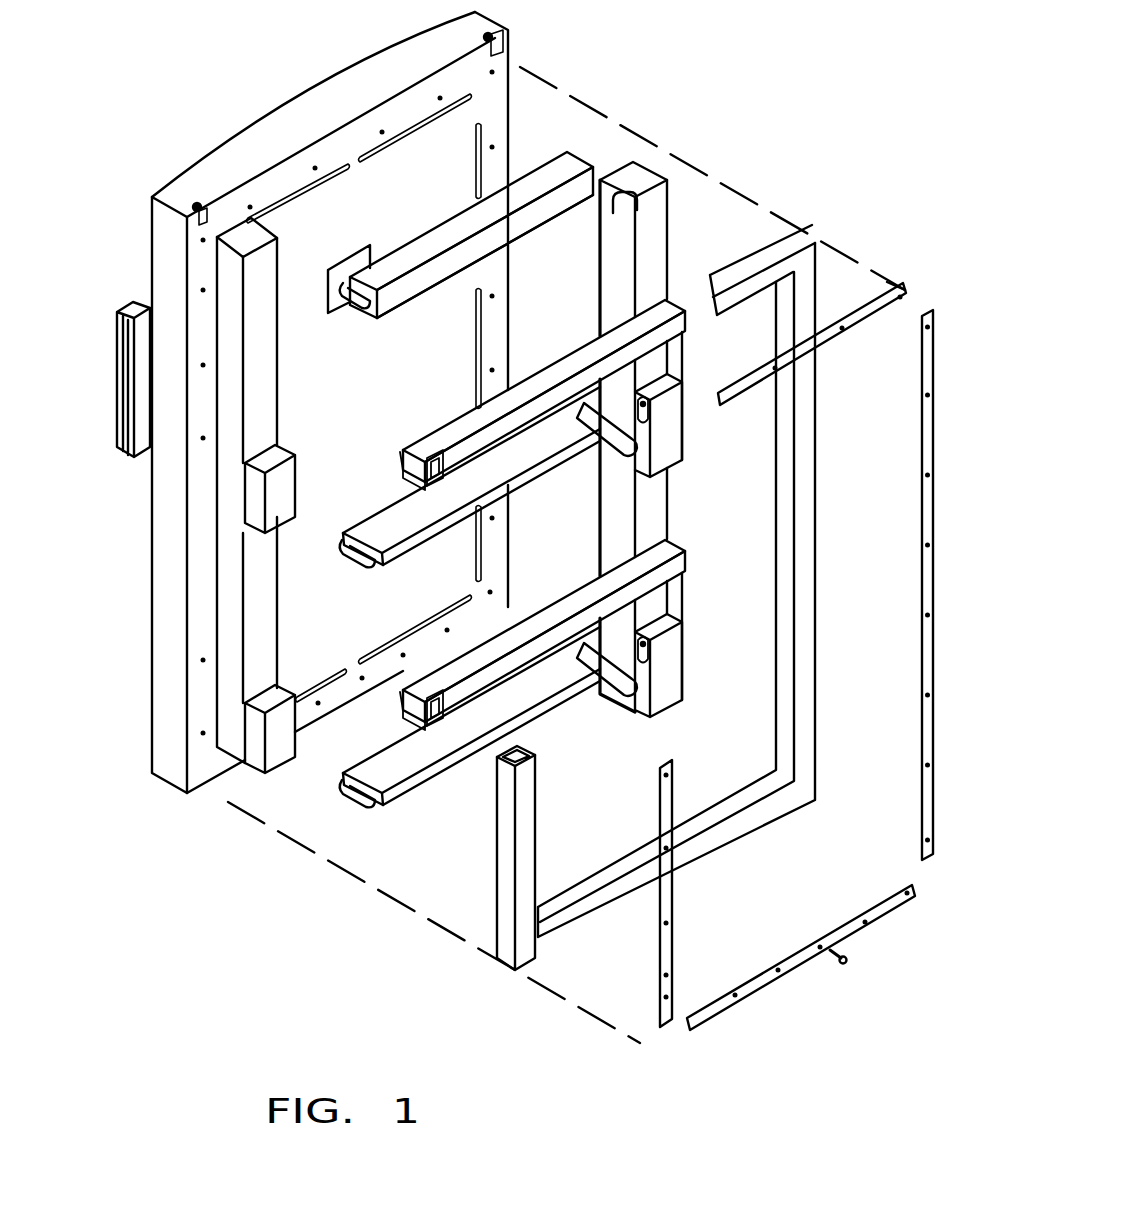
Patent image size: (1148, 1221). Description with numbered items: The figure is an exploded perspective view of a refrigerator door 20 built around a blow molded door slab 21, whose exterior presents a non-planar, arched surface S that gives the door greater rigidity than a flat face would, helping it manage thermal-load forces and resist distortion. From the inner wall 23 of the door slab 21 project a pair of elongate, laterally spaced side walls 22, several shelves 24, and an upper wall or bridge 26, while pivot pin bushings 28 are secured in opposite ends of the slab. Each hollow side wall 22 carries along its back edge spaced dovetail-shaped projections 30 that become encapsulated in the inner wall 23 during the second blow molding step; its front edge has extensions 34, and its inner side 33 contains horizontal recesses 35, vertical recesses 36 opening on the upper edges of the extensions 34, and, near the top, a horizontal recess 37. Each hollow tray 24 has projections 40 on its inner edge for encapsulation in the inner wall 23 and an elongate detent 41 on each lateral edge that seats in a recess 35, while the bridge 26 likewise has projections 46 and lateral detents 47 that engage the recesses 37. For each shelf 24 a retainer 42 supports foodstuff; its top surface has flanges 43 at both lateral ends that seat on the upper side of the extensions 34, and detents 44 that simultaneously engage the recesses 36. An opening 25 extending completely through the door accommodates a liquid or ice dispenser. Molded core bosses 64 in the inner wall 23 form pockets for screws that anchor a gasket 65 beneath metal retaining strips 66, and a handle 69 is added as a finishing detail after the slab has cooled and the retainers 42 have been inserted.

The refrigerator door 20 is at (207, 820).
The door slab 21 is at (349, 396).
The arched surface S is at (290, 93).
The side wall 22 is at (487, 491).
The inner wall 23 is at (420, 372).
The shelf 24 is at (490, 582).
The opening 25 is at (352, 268).
The upper wall 26 is at (518, 222).
The pivot pin bushing 28 is at (197, 203).
The projection 30 is at (630, 437).
The inner side 33 is at (267, 490).
The extension 34 is at (290, 477).
The recess 35 is at (607, 445).
The recess 36 is at (652, 418).
The recess 37 is at (632, 213).
The projection 40 is at (387, 512).
The detent 41 is at (358, 560).
The retainer 42 is at (537, 383).
The flange 43 is at (420, 452).
The detent 44 is at (428, 484).
The projection 46 is at (461, 243).
The detent 47 is at (357, 305).
The core boss 64 is at (165, 585).
The gasket 65 is at (532, 865).
The retaining strip 66 is at (922, 355).
The handle 69 is at (135, 298).